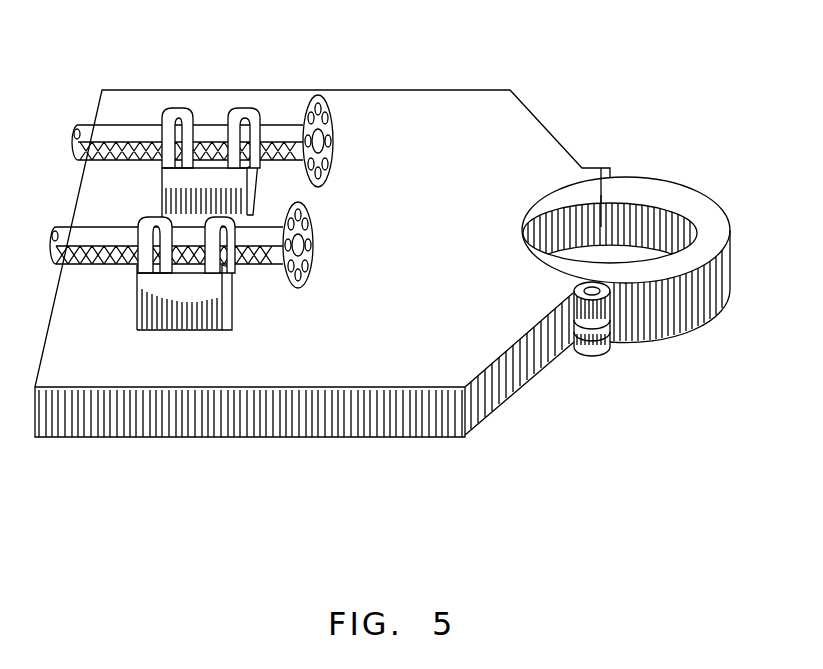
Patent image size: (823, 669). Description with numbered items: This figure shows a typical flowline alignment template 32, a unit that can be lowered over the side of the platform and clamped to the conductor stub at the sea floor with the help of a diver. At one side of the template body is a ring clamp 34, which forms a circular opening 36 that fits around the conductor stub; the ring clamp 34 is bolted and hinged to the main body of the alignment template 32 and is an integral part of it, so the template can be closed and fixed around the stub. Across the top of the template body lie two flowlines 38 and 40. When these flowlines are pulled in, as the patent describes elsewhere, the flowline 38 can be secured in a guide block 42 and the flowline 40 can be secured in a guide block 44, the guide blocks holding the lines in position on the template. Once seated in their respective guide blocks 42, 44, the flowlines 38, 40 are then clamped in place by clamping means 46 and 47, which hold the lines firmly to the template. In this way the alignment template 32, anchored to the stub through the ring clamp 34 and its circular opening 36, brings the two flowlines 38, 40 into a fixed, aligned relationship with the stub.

The flowline alignment template 32 is at (462, 102).
The ring clamp 34 is at (655, 185).
The circular opening 36 is at (619, 246).
The flowline 38 is at (88, 132).
The flowline 40 is at (67, 235).
The guide block 42 is at (160, 198).
The guide block 44 is at (160, 332).
The clamping means 46 is at (250, 110).
The clamping means 47 is at (237, 220).